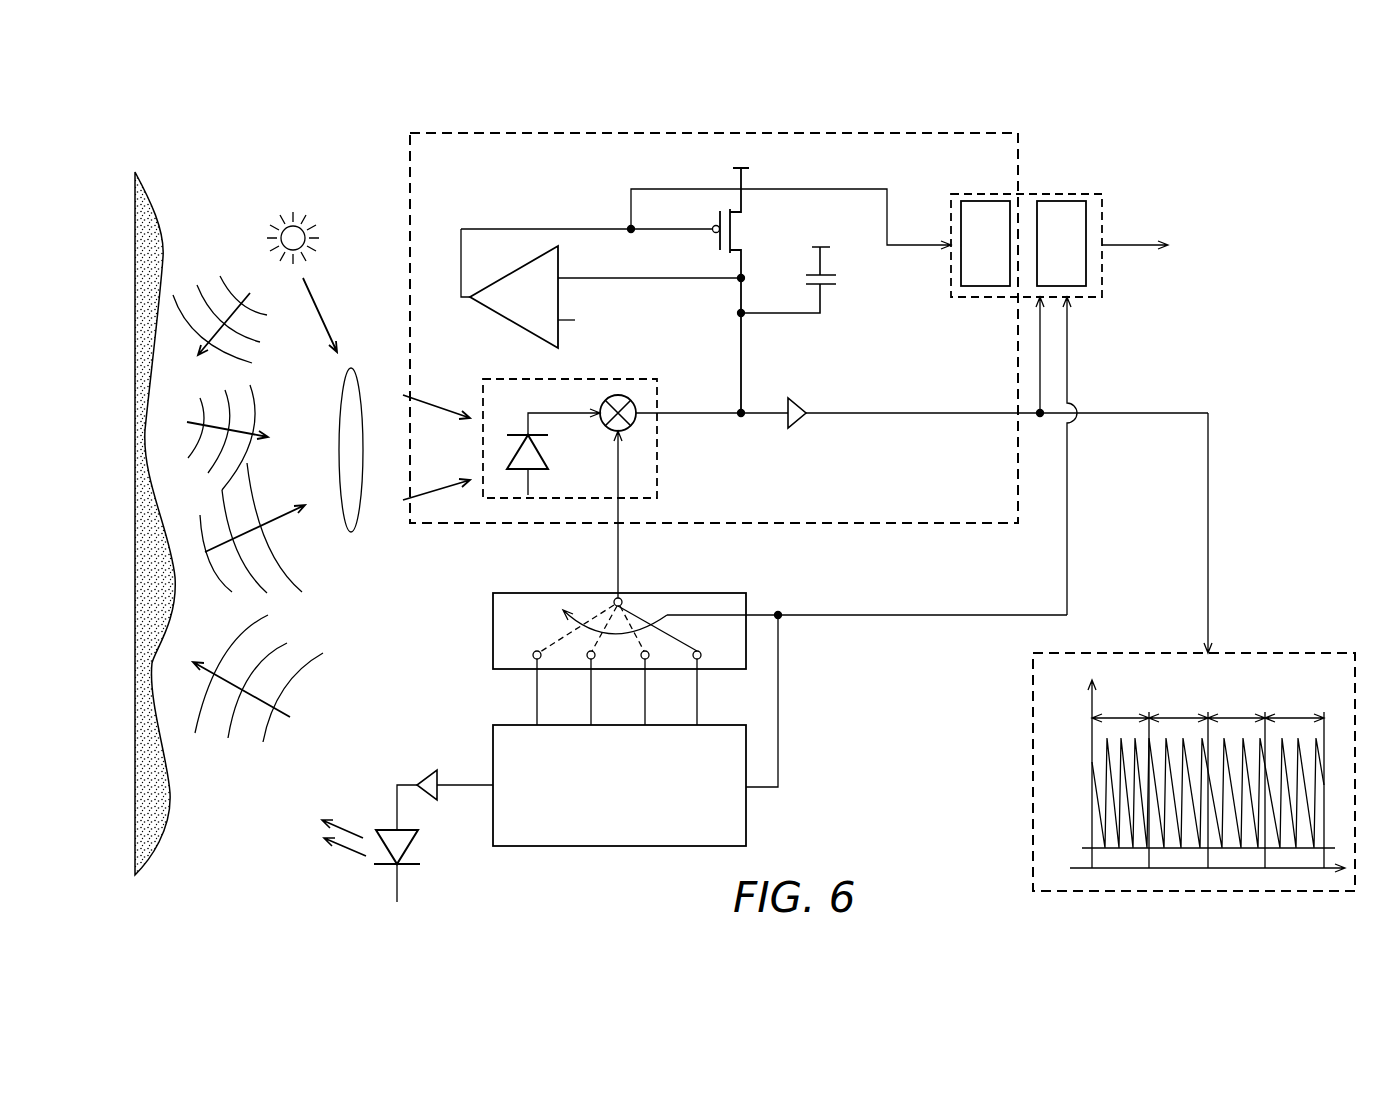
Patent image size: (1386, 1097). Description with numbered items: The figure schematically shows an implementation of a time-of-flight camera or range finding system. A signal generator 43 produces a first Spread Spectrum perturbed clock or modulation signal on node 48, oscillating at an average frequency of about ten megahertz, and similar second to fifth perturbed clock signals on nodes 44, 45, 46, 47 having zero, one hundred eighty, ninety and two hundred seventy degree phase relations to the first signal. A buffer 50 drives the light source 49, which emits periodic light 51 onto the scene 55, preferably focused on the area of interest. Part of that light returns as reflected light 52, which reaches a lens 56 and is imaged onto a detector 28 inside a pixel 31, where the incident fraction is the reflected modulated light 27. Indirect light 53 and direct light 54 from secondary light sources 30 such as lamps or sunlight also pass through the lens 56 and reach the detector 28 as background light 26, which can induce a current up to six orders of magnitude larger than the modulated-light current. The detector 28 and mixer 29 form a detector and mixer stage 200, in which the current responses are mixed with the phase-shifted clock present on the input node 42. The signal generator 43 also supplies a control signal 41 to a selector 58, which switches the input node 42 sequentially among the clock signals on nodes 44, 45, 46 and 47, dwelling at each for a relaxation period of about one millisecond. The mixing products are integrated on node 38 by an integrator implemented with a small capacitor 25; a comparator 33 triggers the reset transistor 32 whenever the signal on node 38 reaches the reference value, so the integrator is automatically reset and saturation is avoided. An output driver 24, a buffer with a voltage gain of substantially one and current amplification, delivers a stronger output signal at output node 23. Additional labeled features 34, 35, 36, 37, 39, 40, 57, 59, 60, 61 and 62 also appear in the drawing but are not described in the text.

The output node 23 is at (890, 400).
The output driver 24 is at (805, 425).
The capacitor 25 is at (830, 285).
The background light 26 is at (432, 400).
The reflected modulated light 27 is at (430, 492).
The detector 28 is at (535, 470).
The mixer 29 is at (636, 420).
The secondary light sources 30 is at (300, 222).
The pixel 31 is at (950, 536).
The reset transistor 32 is at (735, 228).
The comparator 33 is at (495, 310).
The 0 degree phase interval 34 is at (1115, 717).
The 180 degree phase interval 35 is at (1170, 717).
The 90 degree phase interval 36 is at (1225, 717).
The 270 degree phase interval 37 is at (1283, 717).
The integrator node 38 is at (741, 370).
The processing unit 39 is at (1107, 212).
The output 40 is at (1120, 248).
The control signal 41 is at (1067, 525).
The input node 42 is at (620, 563).
The signal generator 43 is at (757, 823).
The node 44 is at (697, 713).
The node 45 is at (645, 695).
The node 46 is at (591, 712).
The node 47 is at (537, 686).
The node 48 is at (475, 782).
The light source 49 is at (390, 828).
The buffer 50 is at (428, 772).
The periodic light 51 is at (276, 678).
The reflected light 52 is at (297, 512).
The indirect light 53 is at (262, 425).
The direct light 54 is at (318, 308).
The scene 55 is at (143, 200).
The lens 56 is at (355, 530).
The feedback line 57 is at (565, 228).
The selector 58 is at (731, 580).
The waveform diagram 59 is at (1281, 640).
The processing block 60 is at (977, 200).
The processing block 61 is at (1063, 200).
The sawtooth waveform 62 is at (1105, 752).
The detector and mixer stage 200 is at (637, 367).